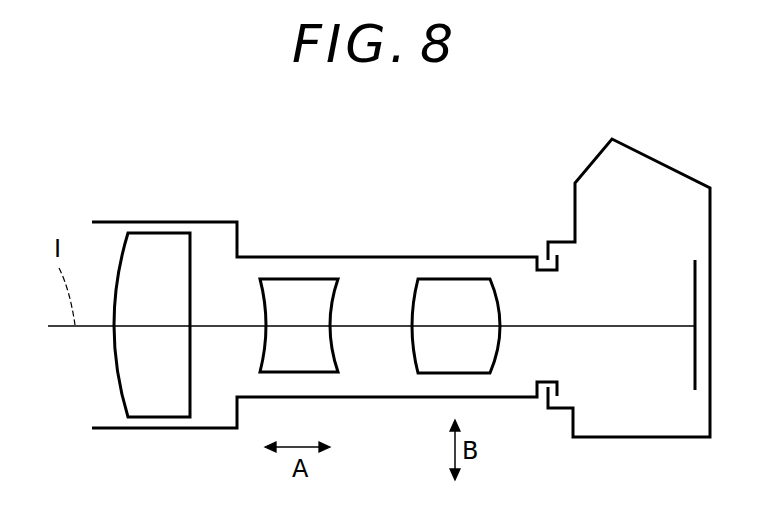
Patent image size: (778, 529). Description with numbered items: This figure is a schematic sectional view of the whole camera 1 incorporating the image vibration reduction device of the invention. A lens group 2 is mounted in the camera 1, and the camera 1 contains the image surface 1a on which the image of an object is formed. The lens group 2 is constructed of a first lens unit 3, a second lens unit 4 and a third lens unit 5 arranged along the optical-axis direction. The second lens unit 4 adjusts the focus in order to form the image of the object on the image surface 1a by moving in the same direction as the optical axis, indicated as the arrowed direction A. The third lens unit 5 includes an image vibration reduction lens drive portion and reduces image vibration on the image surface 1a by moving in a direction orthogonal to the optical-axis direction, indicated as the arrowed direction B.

The camera 1 is at (692, 166).
The image surface 1a is at (694, 380).
The lens group 2 is at (458, 238).
The first lens unit 3 is at (145, 408).
The second lens unit 4 is at (270, 372).
The third lens unit 5 is at (443, 358).